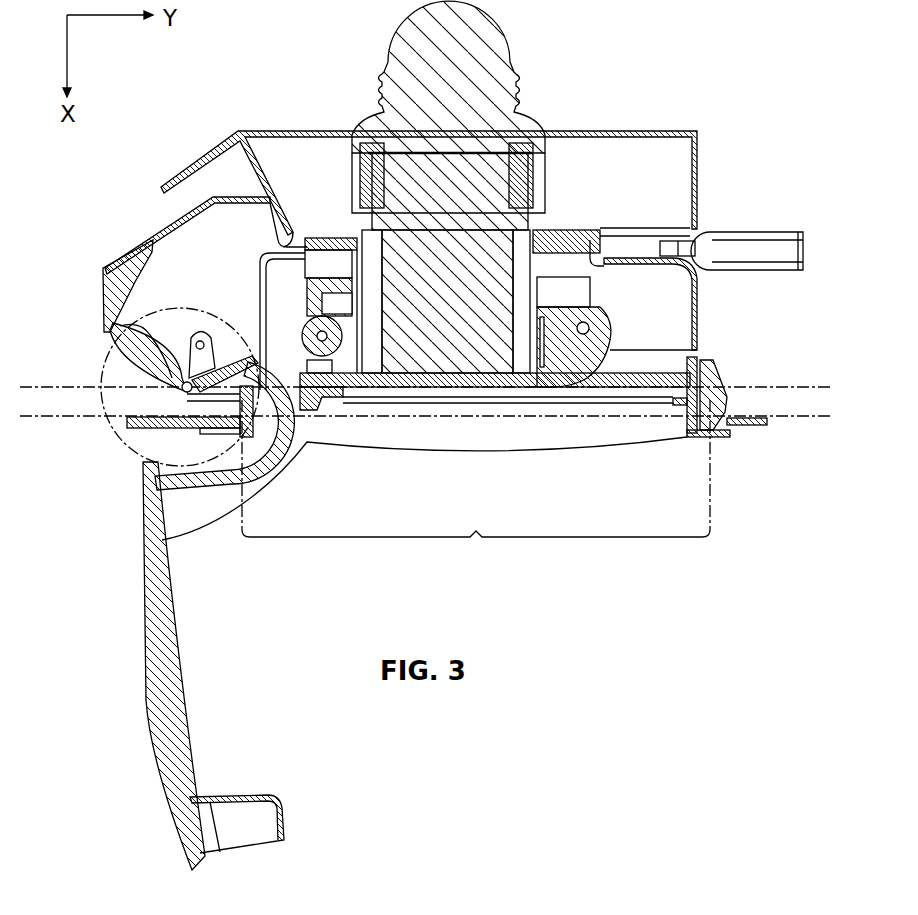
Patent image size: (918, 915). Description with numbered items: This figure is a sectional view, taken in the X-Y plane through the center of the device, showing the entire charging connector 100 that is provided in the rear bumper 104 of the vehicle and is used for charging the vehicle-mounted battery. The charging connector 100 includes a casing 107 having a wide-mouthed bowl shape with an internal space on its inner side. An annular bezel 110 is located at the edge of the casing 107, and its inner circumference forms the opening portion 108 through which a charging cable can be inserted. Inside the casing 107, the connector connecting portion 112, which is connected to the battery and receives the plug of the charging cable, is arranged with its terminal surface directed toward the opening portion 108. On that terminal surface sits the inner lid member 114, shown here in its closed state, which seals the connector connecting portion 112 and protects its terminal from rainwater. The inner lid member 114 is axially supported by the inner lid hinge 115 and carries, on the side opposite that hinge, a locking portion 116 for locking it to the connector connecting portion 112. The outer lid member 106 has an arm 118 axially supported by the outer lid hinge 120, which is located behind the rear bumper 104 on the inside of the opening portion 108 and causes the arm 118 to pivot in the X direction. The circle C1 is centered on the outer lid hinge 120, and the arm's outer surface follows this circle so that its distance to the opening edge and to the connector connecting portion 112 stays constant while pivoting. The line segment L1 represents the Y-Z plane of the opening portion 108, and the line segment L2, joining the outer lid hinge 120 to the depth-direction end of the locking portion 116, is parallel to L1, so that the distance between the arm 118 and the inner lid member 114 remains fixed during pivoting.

The charging connector 100 is at (258, 108).
The rear bumper 104 is at (157, 427).
The outer lid member 106 is at (148, 695).
The casing 107 is at (699, 310).
The opening portion 108 is at (476, 486).
The bezel 110 is at (565, 440).
The connector connecting portion 112 is at (513, 277).
The inner lid member 114 is at (495, 377).
The inner lid hinge 115 is at (600, 323).
The locking portion 116 is at (313, 410).
The arm 118 is at (197, 490).
The outer lid hinge 120 is at (107, 367).
The line segment L1 is at (800, 420).
The line segment L2 is at (802, 387).
The circle portion C1 is at (172, 305).